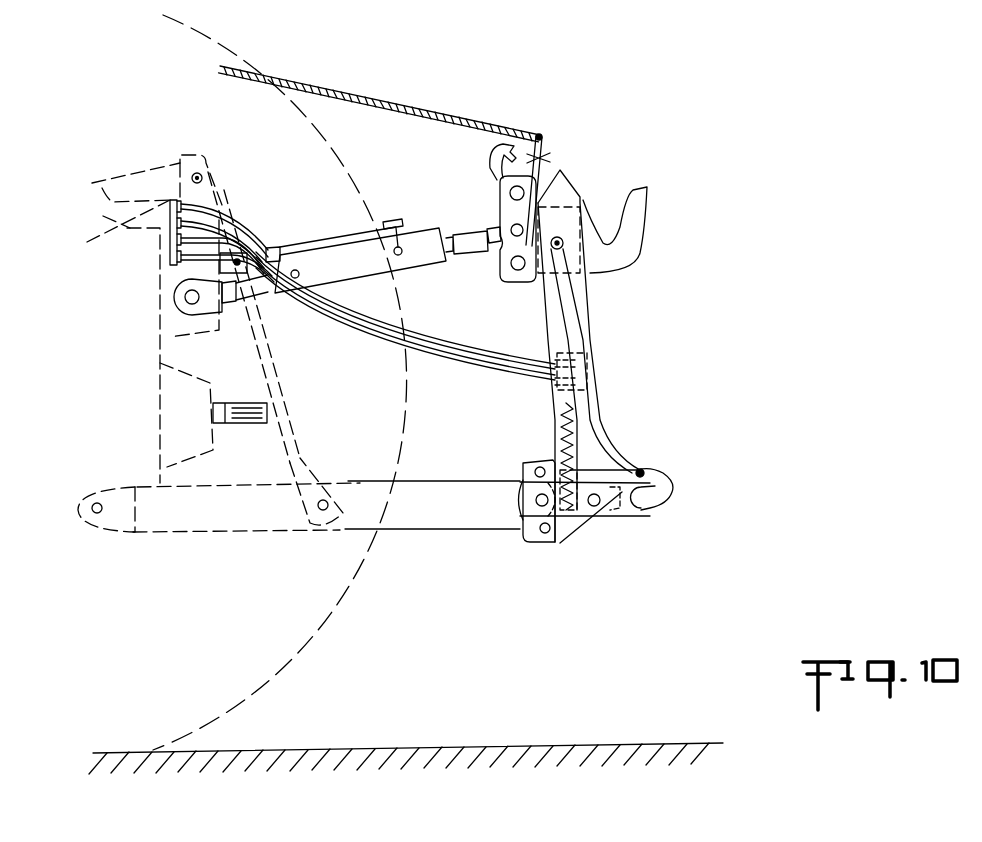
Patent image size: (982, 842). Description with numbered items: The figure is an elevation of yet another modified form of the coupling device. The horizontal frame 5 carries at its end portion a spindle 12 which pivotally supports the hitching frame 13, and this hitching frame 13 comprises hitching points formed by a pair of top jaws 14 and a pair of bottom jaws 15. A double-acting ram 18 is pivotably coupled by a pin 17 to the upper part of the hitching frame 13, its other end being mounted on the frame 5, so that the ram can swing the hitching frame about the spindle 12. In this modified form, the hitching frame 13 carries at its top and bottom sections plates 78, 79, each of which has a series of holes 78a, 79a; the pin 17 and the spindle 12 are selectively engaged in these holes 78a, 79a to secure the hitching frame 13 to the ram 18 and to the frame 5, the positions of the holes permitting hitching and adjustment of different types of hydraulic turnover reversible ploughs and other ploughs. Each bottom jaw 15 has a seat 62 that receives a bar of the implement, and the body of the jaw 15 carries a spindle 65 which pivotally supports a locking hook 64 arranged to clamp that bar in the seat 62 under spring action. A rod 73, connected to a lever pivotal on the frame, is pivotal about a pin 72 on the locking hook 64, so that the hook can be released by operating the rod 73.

The frame 5 is at (400, 520).
The spindle 12 is at (540, 507).
The hitching frame 13 is at (580, 298).
The top jaws 14 is at (633, 223).
The bottom jaws 15 is at (573, 528).
The pin 17 is at (503, 215).
The double-acting ram 18 is at (332, 260).
The seat 62 is at (642, 512).
The locking hook 64 is at (660, 487).
The spindle 65 is at (596, 508).
The pin 72 is at (641, 468).
The rod 73 is at (570, 330).
The plate 78 is at (497, 256).
The holes 78a is at (505, 192).
The plate 79 is at (538, 535).
The holes 79a is at (523, 467).